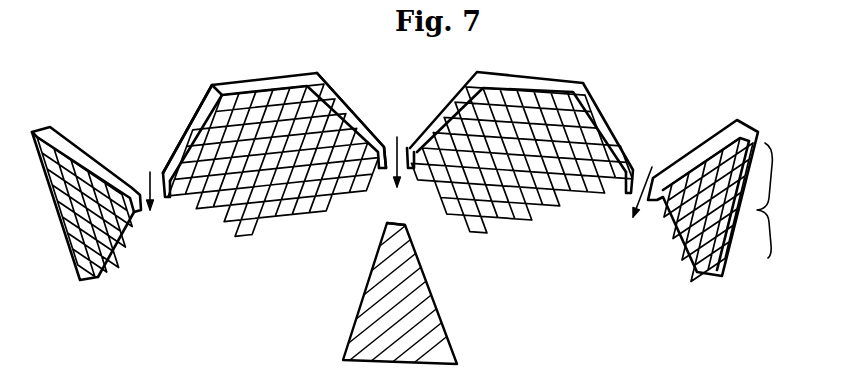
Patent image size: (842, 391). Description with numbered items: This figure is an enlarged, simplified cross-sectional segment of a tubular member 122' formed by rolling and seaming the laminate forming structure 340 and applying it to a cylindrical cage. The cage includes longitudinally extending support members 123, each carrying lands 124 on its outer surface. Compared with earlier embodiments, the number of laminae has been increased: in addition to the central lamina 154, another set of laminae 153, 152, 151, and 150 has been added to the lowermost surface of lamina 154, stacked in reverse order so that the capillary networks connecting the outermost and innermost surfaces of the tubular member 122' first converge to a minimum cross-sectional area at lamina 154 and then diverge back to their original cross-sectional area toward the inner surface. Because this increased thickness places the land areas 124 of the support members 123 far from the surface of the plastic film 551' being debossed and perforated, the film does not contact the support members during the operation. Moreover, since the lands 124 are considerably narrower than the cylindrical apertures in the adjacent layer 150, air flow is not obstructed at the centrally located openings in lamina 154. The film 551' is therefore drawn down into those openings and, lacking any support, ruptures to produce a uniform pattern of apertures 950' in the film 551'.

The tubular member 122' is at (86, 158).
The lamina 150 is at (283, 93).
The lamina 151 is at (310, 110).
The lamina 152 is at (335, 123).
The lamina 153 is at (188, 141).
The lamina 154 is at (178, 172).
The film 551' is at (520, 137).
The apertures 950' is at (379, 212).
The lands 124 is at (390, 224).
The longitudinally extending support members 123 is at (430, 327).
The laminate forming structure 340 is at (718, 201).